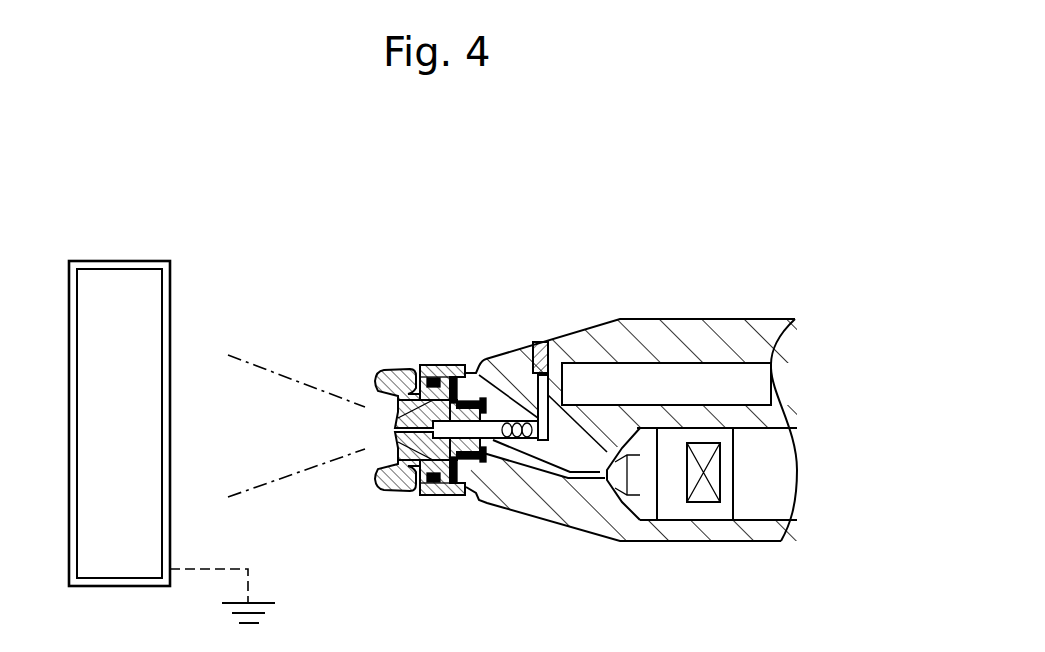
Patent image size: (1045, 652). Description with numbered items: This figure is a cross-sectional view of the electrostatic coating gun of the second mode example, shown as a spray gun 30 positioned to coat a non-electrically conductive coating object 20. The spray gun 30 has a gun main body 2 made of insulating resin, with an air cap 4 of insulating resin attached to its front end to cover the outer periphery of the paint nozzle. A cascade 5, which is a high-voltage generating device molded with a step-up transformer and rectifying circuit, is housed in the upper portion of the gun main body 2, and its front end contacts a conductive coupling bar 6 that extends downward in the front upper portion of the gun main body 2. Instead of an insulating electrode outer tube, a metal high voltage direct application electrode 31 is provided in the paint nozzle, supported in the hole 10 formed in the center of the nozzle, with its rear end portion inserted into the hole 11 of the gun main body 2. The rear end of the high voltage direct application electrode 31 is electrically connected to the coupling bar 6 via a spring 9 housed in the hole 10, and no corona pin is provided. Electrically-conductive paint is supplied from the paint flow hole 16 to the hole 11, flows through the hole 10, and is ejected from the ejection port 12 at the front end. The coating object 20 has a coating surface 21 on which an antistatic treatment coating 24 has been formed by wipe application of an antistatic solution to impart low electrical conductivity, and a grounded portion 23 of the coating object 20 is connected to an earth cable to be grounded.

The gun main body 2 is at (738, 320).
The air cap 4 is at (392, 372).
The cascade 5 is at (683, 376).
The coupling bar 6 is at (538, 388).
The spring 9 is at (515, 413).
The hole 10 is at (425, 385).
The hole 11 is at (489, 443).
The ejection port 12 is at (437, 426).
The paint flow hole 16 is at (588, 478).
The non-electrically conductive coating object 20 is at (143, 293).
The coating surface 21 is at (160, 325).
The grounded portion 23 is at (170, 567).
The antistatic treatment coating 24 is at (170, 420).
The spray gun 30 is at (750, 212).
The high voltage direct application electrode 31 is at (404, 470).